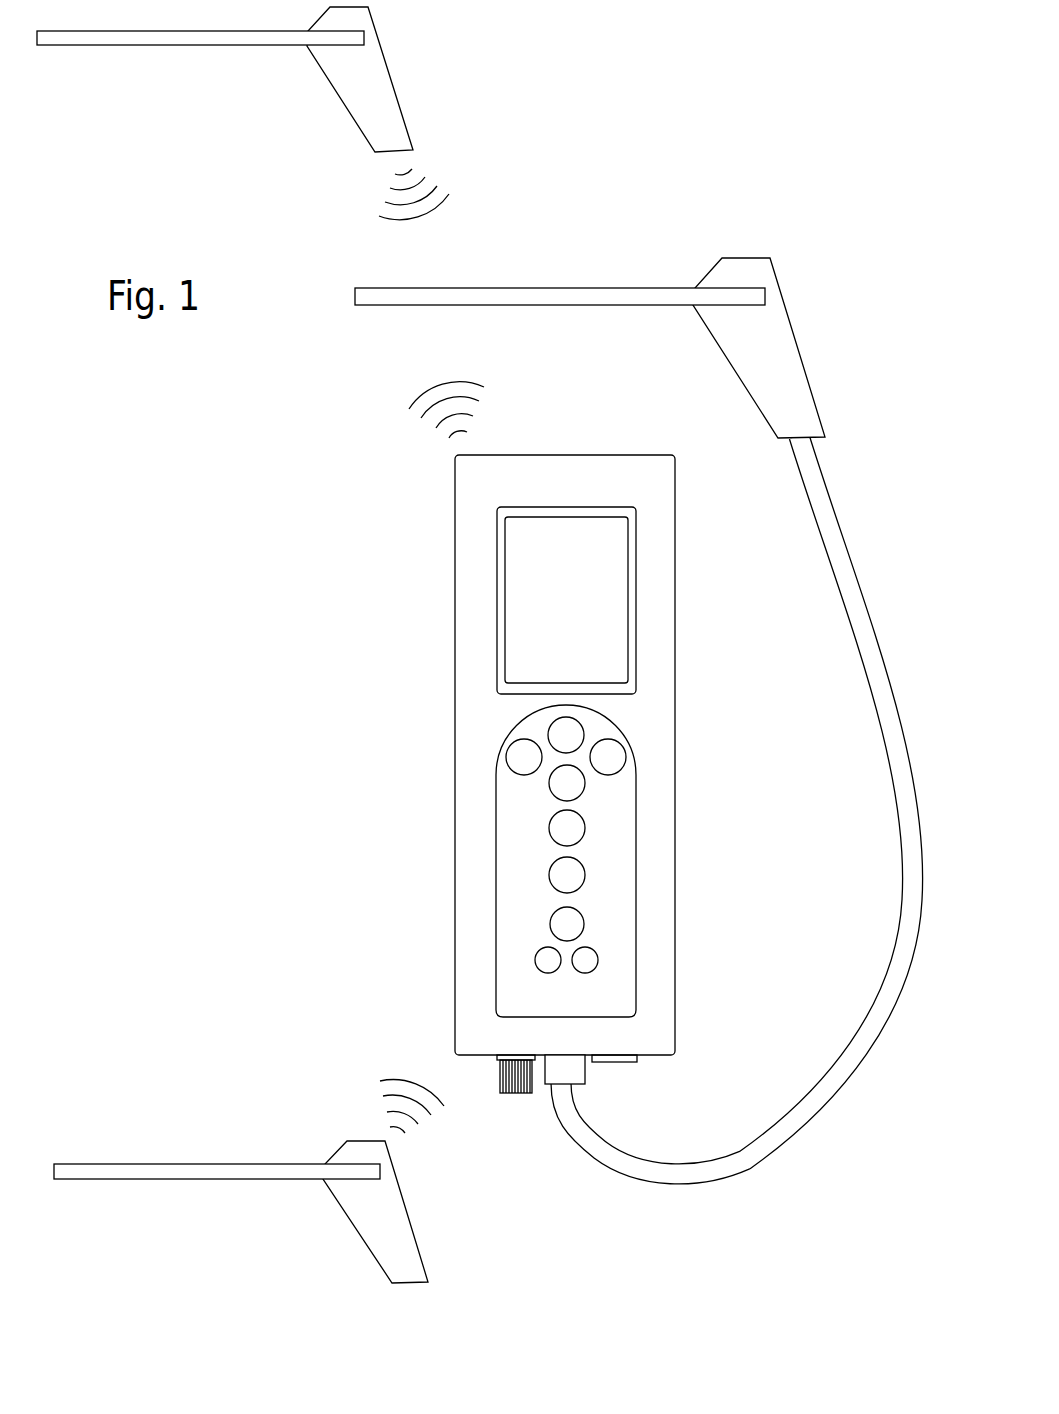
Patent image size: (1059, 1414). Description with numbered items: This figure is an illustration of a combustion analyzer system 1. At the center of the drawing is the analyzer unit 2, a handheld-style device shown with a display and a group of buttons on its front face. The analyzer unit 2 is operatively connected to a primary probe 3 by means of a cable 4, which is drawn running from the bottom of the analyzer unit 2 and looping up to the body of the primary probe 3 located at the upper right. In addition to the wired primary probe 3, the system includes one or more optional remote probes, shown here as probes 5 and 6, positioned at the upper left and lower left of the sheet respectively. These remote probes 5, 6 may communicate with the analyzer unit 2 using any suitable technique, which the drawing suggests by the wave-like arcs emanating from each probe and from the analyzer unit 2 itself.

The combustion analyzer system 1 is at (846, 60).
The analyzer unit 2 is at (665, 667).
The primary probe 3 is at (777, 313).
The cable 4 is at (890, 708).
The remote probe 5 is at (373, 52).
The remote probe 6 is at (400, 1187).